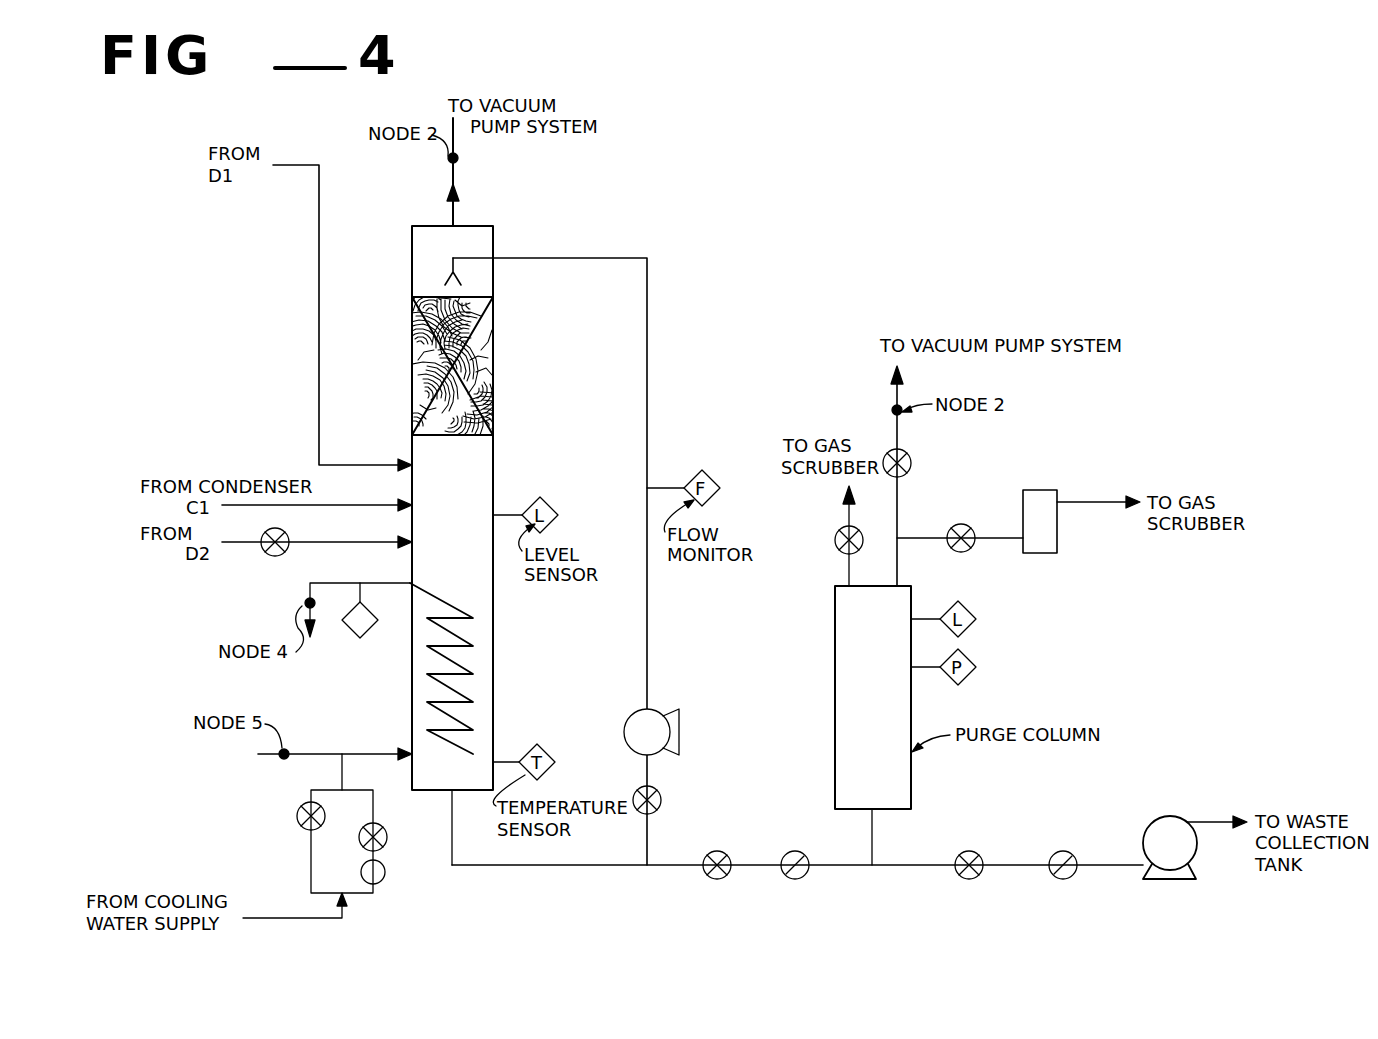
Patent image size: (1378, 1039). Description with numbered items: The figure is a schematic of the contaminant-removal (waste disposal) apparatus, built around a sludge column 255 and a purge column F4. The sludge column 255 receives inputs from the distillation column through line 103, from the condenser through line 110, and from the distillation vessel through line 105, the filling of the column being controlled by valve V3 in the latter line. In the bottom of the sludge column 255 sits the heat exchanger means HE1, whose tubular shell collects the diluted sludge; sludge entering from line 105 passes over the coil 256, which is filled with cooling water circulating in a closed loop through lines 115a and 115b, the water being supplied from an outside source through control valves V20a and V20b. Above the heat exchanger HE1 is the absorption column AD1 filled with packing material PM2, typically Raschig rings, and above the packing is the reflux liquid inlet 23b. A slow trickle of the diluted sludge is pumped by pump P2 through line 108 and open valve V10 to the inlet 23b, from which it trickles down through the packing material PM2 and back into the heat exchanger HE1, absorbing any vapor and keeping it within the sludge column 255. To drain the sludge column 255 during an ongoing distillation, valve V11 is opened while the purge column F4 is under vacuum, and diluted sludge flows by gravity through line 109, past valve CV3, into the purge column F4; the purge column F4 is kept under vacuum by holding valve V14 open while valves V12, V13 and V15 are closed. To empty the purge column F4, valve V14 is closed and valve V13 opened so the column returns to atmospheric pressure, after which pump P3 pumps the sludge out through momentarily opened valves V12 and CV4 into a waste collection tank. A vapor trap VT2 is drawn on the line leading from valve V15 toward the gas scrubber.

The sludge column 255 is at (496, 468).
The reflux liquid inlet 23b is at (468, 255).
The absorption column AD1 is at (486, 348).
The packing material PM2 is at (486, 384).
The line 108 is at (651, 296).
The pump P2 is at (656, 712).
The valve V10 is at (659, 809).
The line 103 is at (319, 287).
The line 110 is at (332, 502).
The line 105 is at (306, 545).
The valve V3 is at (272, 558).
The line 115b is at (388, 585).
The heat exchanger means HE1 is at (480, 668).
The coil 256 is at (466, 608).
The line 115a is at (314, 750).
The control valve V20b is at (300, 826).
The control valve V20a is at (405, 852).
The line 109 is at (538, 868).
The valve V11 is at (710, 877).
The valve CV3 is at (788, 877).
The valve V12 is at (962, 877).
The valve CV4 is at (1053, 877).
The pump P3 is at (1192, 855).
The purge column F4 is at (913, 798).
The valve V14 is at (912, 466).
The valve V13 is at (842, 552).
The valve V15 is at (950, 550).
The vapor trap VT2 is at (1081, 524).